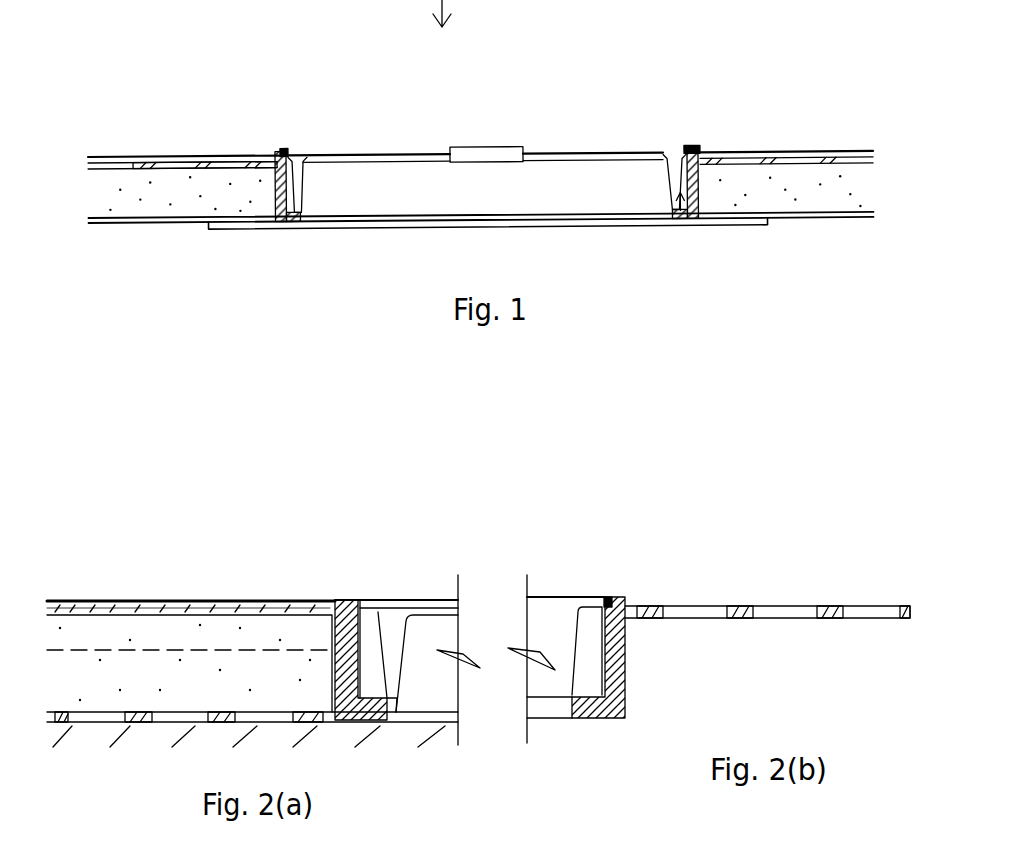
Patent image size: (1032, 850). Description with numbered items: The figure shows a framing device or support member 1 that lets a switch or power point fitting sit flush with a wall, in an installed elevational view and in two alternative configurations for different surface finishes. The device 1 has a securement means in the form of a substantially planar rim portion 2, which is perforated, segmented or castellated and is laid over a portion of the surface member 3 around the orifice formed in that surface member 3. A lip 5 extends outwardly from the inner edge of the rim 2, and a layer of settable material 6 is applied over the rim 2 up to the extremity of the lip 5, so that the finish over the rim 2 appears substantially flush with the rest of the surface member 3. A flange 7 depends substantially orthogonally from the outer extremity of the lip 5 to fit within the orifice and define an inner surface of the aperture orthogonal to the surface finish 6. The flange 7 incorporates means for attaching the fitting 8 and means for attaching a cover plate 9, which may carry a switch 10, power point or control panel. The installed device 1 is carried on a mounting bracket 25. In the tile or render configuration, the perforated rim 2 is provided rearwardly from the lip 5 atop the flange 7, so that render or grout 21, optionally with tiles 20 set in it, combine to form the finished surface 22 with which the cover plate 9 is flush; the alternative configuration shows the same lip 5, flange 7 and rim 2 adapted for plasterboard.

In FIG. 1, the framing device or support member 1 is at (220, 96).
In FIG. 2B, the framing device or support member 1 is at (629, 741).
In FIG. 1, the rim portion 2 is at (827, 157).
In FIG. 2A, the rim portion 2 is at (157, 727).
In FIG. 2B, the rim portion 2 is at (738, 607).
In FIG. 1, the surface member 3 is at (827, 192).
In FIG. 1, the lip 5 is at (684, 129).
In FIG. 2A, the lip 5 is at (353, 584).
In FIG. 2B, the lip 5 is at (607, 581).
In FIG. 1, the layer of settable material 6 is at (749, 139).
In FIG. 1, the flange 7 is at (677, 213).
In FIG. 2A, the flange 7 is at (370, 648).
In FIG. 2B, the flange 7 is at (634, 678).
In FIG. 1, the fitting 8 is at (426, 203).
In FIG. 1, the cover plate 9 is at (351, 157).
In FIG. 2A, the cover plate 9 is at (423, 597).
In FIG. 1, the switch 10 is at (493, 152).
In FIG. 2A, the tiles 20 is at (100, 633).
In FIG. 2A, the render or grout 21 is at (168, 677).
In FIG. 2A, the finished surface 22 is at (264, 588).
In FIG. 1, the mounting bracket 25 is at (343, 228).